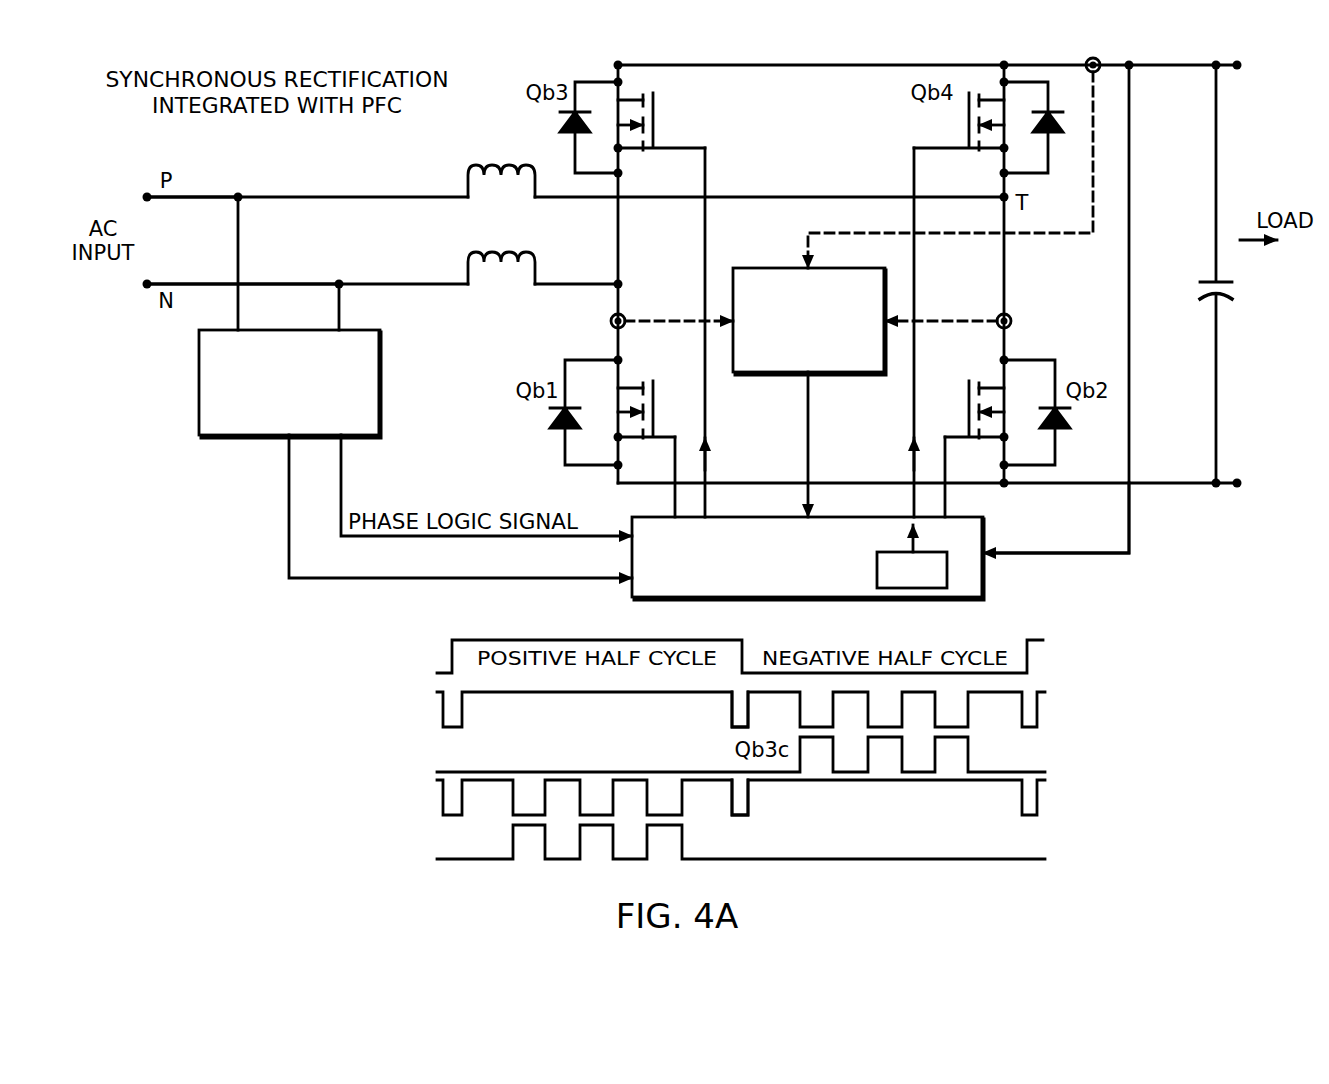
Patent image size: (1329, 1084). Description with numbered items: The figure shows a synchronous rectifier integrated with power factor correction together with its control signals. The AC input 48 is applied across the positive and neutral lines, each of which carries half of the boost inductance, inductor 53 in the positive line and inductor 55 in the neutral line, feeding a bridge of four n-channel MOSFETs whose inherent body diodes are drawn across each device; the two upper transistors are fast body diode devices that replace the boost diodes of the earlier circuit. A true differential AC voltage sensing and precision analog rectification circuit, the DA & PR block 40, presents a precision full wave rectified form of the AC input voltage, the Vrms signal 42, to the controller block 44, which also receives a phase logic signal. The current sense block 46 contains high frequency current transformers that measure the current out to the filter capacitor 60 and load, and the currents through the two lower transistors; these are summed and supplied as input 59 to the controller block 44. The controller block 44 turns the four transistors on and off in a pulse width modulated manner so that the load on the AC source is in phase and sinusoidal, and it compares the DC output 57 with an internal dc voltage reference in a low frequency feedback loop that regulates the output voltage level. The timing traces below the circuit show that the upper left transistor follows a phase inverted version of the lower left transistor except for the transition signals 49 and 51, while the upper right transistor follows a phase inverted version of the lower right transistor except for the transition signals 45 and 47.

The AC input 48 is at (146, 195).
The inductor 53 is at (468, 170).
The inductor 55 is at (468, 256).
The DA & PR block 40 is at (199, 380).
The Vrms signal 42 is at (289, 508).
The current sense block 46 is at (782, 372).
The current sense input signal 59 is at (812, 446).
The controller block 44 is at (985, 524).
The DC output voltage 57 is at (1129, 527).
The filter capacitor 60 is at (1208, 280).
The Qb3 transition signal 49 is at (443, 712).
The Qb3 transition signal 51 is at (732, 705).
The Qb4 transition signal 45 is at (443, 797).
The Qb4 transition signal 47 is at (748, 790).